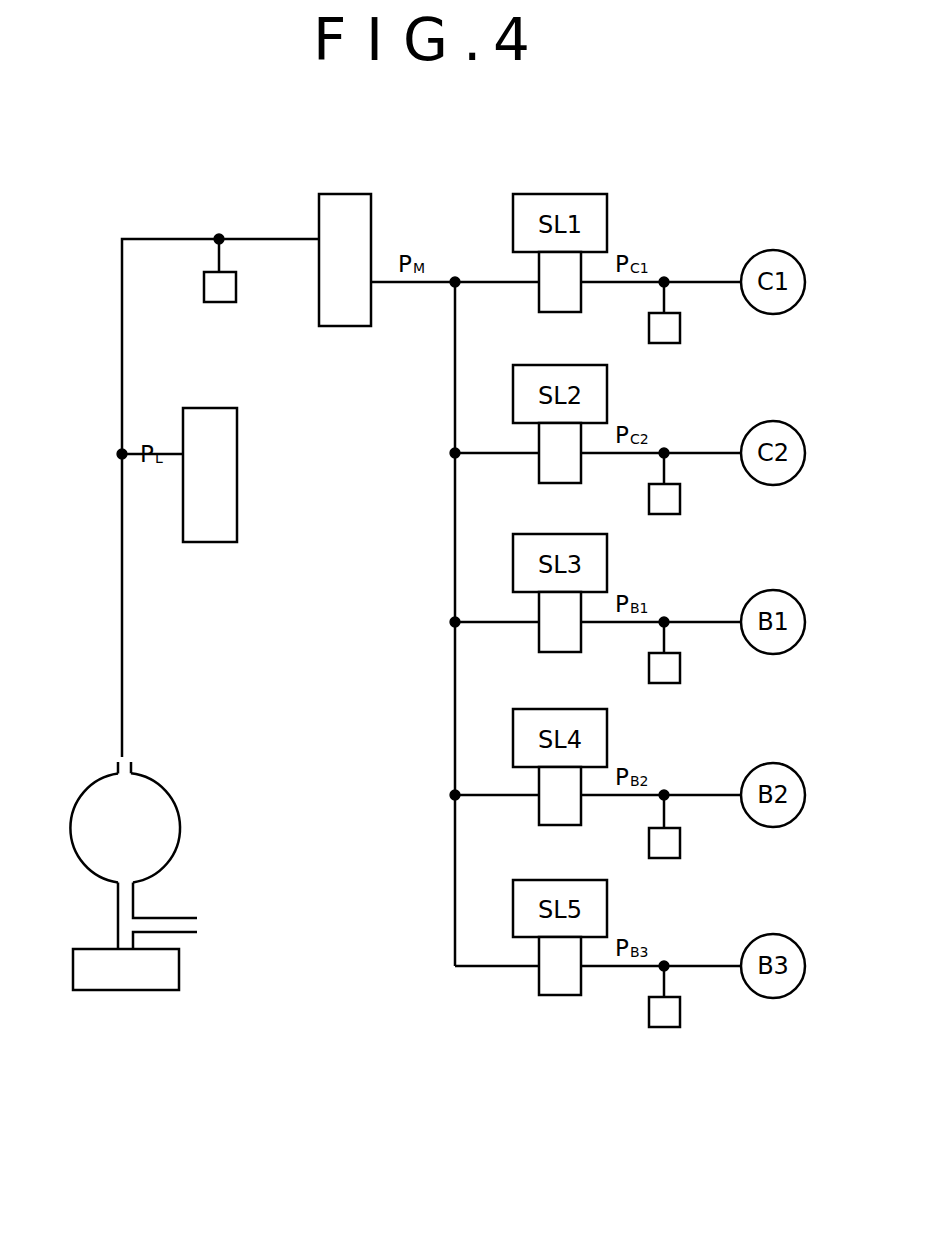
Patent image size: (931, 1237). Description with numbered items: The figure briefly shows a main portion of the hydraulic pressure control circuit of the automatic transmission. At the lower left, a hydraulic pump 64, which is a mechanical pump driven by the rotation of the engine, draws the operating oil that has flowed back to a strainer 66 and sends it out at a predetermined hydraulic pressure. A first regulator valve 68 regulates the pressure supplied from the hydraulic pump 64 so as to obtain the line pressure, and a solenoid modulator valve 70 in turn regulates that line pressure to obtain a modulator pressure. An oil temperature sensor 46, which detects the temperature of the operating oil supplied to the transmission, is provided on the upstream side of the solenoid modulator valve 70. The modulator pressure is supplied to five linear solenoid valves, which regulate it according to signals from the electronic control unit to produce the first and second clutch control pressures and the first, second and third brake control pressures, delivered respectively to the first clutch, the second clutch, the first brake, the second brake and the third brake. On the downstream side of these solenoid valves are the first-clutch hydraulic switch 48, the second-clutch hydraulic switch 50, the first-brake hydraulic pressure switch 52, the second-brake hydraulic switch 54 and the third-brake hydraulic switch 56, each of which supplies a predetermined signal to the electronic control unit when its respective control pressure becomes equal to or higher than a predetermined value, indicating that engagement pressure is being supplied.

The oil temperature sensor 46 is at (227, 288).
The C1 hydraulic switch 48 is at (672, 330).
The C2 hydraulic switch 50 is at (672, 501).
The B1 hydraulic pressure switch 52 is at (672, 670).
The B2 hydraulic switch 54 is at (672, 845).
The B3 hydraulic switch 56 is at (672, 1014).
The hydraulic pump 64 is at (147, 788).
The strainer 66 is at (170, 978).
The first regulator valve 68 is at (230, 426).
The solenoid modulator valve 70 is at (360, 212).